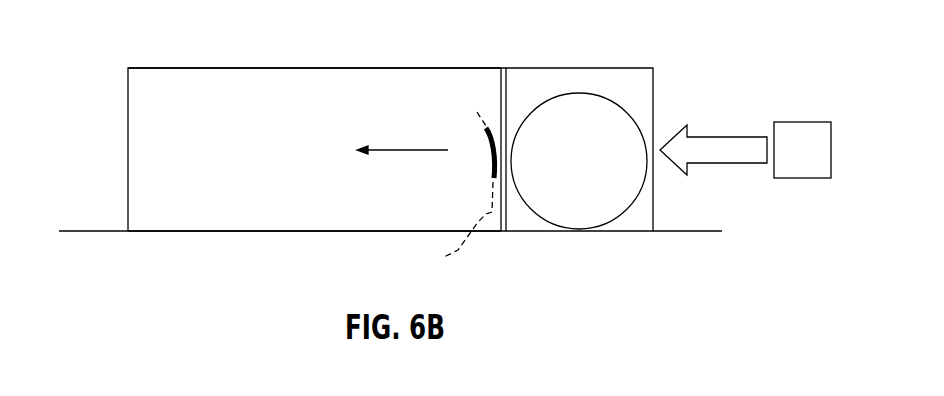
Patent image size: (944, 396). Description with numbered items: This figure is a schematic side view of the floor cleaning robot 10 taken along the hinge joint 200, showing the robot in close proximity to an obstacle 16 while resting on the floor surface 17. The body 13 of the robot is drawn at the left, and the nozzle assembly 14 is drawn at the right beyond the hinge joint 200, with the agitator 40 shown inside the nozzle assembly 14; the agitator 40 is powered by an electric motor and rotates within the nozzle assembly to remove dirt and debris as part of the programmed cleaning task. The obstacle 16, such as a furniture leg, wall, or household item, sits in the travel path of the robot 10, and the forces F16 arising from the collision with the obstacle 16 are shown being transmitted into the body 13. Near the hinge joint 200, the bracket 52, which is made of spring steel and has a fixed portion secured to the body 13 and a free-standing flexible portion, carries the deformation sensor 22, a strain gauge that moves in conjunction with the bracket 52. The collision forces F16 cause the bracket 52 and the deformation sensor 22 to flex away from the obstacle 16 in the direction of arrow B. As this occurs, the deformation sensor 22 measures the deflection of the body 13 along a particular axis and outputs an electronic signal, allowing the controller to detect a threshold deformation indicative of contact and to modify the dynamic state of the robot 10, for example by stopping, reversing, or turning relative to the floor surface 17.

The floor cleaning robot 10 is at (746, 46).
The body 13 is at (330, 150).
The nozzle assembly 14 is at (655, 103).
The obstacle 16 is at (788, 163).
The floor surface 17 is at (82, 230).
The deformation sensor 22 is at (487, 153).
The agitator 40 is at (595, 176).
The bracket 52 is at (451, 195).
The hinge joint 200 is at (531, 54).
The arrow B is at (395, 151).
The forces F16 is at (717, 164).